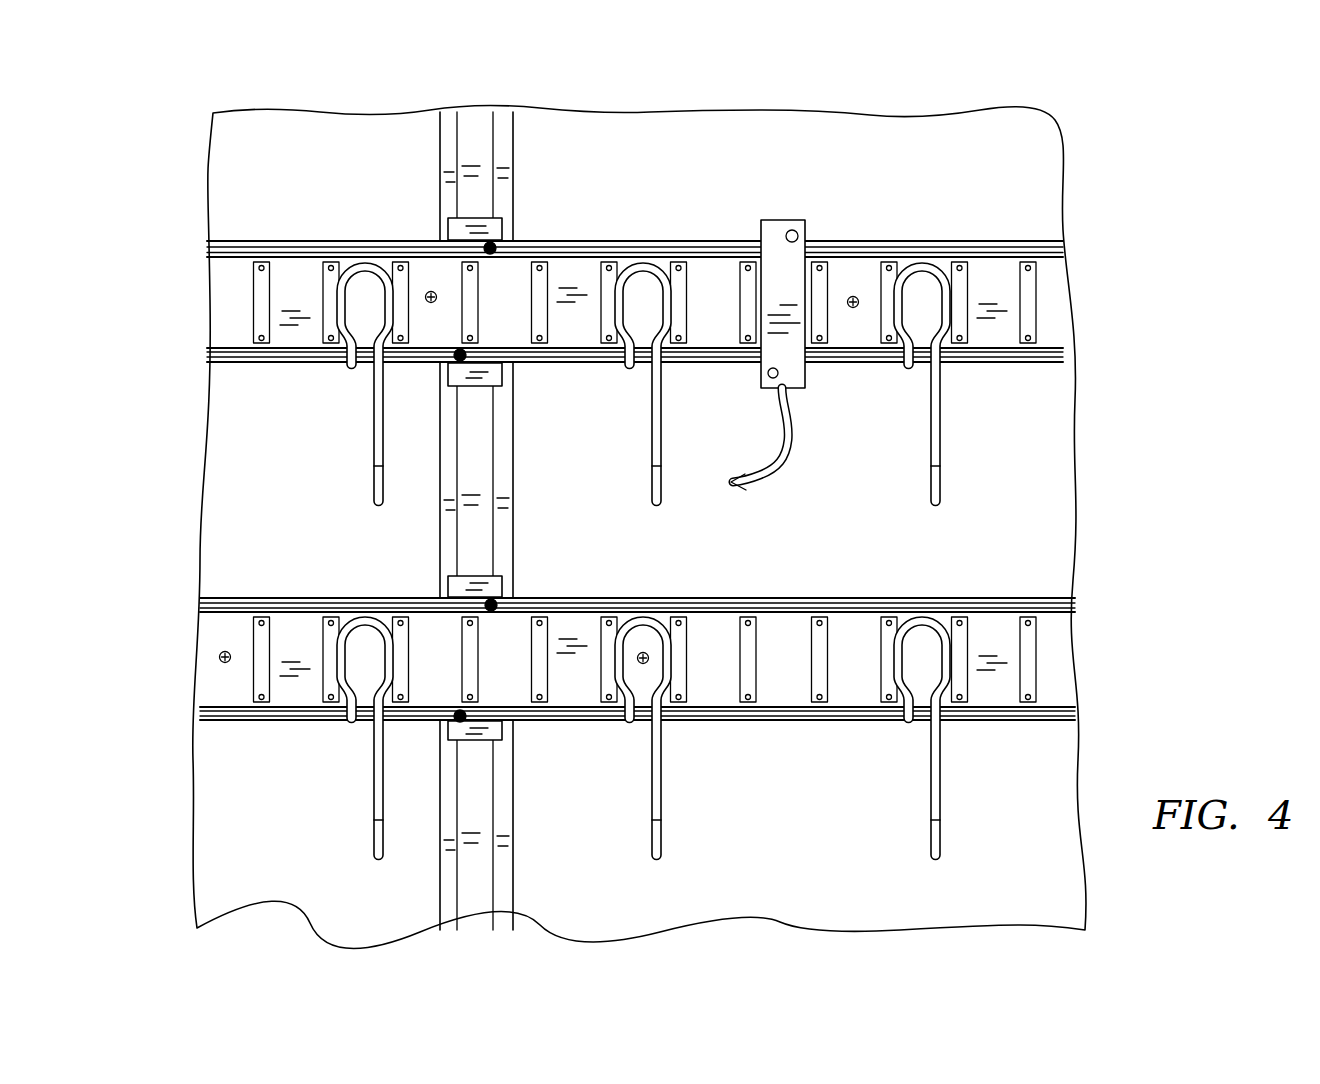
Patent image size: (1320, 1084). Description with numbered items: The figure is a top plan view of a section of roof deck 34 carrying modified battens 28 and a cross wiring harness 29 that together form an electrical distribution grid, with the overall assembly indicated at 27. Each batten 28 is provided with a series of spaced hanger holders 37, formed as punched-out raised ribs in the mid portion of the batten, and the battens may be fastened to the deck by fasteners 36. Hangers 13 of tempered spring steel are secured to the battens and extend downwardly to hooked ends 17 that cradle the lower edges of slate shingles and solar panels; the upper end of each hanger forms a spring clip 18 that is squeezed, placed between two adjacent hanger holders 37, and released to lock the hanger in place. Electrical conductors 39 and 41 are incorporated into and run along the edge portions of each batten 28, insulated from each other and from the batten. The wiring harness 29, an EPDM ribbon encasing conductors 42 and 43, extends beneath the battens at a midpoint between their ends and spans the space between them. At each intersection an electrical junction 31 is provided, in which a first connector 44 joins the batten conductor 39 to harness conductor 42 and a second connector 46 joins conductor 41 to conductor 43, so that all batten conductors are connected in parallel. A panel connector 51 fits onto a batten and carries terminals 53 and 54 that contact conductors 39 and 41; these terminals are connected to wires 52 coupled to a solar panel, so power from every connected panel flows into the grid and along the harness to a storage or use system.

The hanger 13 is at (609, 528).
The hooked end 17 is at (373, 480).
The spring clip 18 is at (363, 266).
The display assembly 27 is at (677, 154).
The batten 28 is at (637, 480).
The wiring harness 29 is at (458, 521).
The electrical junction 31 is at (478, 217).
The panel 34 is at (1023, 478).
The screw fastener 36 is at (430, 297).
The hanger holder 37 is at (322, 292).
The electrical conductor 39 is at (987, 244).
The electrical conductor 41 is at (987, 358).
The electrical conductor 42 is at (497, 472).
The electrical conductor 43 is at (462, 535).
The first connector 44 is at (494, 244).
The second connector 46 is at (460, 357).
The panel connector 51 is at (787, 284).
The wire 52 is at (787, 468).
The terminal 53 is at (798, 235).
The terminal 54 is at (768, 383).